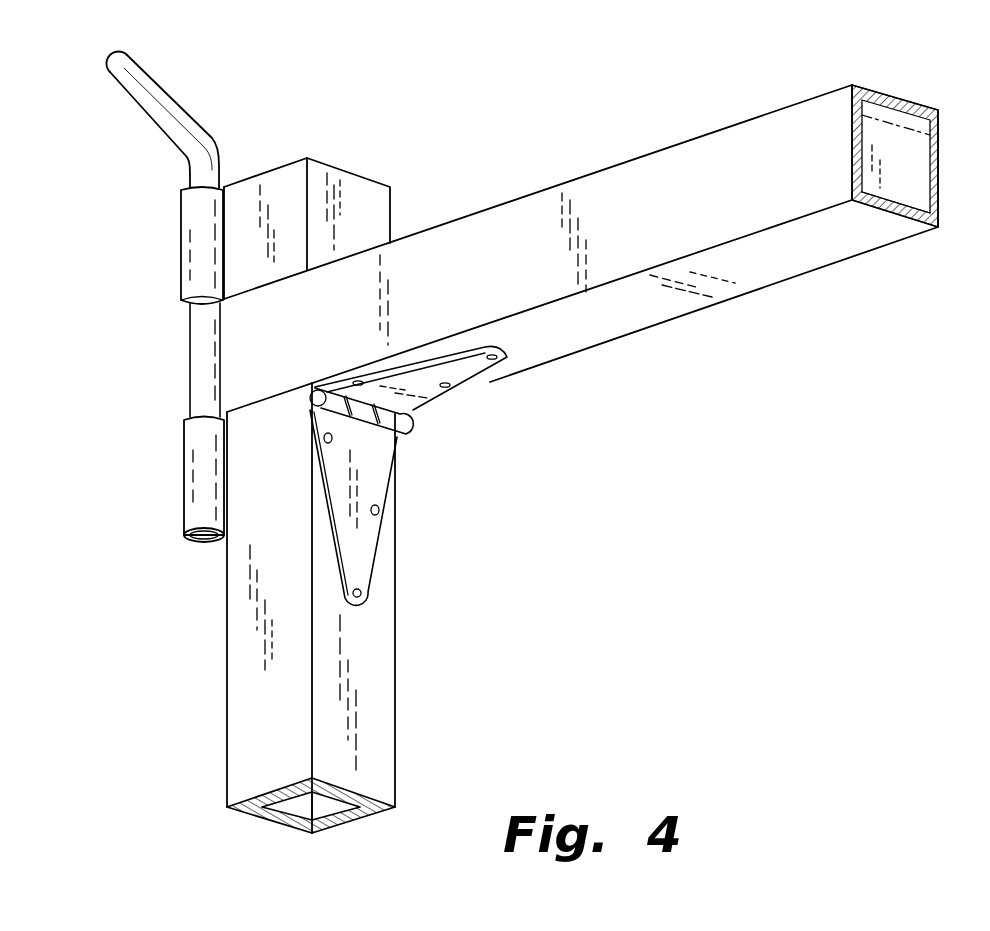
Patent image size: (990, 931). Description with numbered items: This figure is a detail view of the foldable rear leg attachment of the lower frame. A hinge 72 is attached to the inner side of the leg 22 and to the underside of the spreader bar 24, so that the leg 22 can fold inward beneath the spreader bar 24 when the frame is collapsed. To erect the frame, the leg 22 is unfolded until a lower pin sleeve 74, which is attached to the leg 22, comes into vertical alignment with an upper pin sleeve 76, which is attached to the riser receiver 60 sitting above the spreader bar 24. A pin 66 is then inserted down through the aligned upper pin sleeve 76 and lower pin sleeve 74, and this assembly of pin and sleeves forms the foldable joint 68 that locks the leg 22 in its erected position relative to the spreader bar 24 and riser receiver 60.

The leg 22 is at (382, 658).
The spreader bar 24 is at (643, 157).
The riser receiver 60 is at (364, 178).
The pin 66 is at (176, 102).
The foldable joint 68 is at (92, 307).
The hinge 72 is at (380, 467).
The lower pin sleeve 74 is at (190, 500).
The upper pin sleeve 76 is at (180, 210).